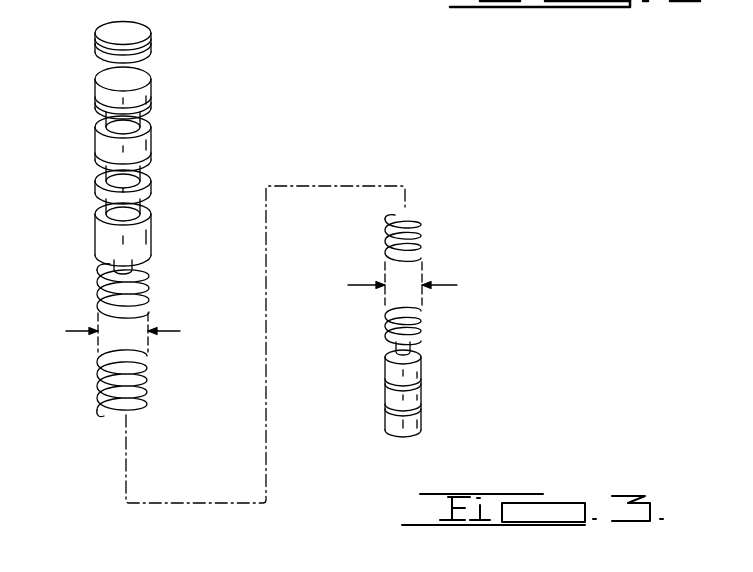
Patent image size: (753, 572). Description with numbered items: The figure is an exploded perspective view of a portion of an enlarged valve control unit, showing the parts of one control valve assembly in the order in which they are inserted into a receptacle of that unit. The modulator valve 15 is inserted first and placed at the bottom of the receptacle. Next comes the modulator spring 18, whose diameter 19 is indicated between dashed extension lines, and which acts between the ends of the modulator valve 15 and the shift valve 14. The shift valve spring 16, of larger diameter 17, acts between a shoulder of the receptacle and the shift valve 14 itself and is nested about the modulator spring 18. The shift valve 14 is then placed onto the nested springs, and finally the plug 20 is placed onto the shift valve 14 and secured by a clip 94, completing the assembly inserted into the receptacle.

The plug 20 is at (110, 36).
The clip 94 is at (103, 55).
The shift valve 14 is at (97, 148).
The diameter 17 is at (66, 331).
The shift valve spring 16 is at (100, 384).
The diameter 19 is at (452, 285).
The modulator spring 18 is at (423, 322).
The modulator valve 15 is at (423, 397).